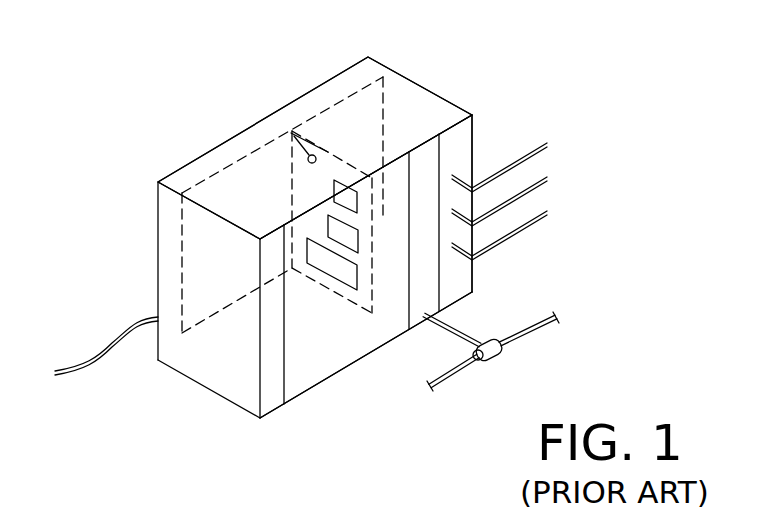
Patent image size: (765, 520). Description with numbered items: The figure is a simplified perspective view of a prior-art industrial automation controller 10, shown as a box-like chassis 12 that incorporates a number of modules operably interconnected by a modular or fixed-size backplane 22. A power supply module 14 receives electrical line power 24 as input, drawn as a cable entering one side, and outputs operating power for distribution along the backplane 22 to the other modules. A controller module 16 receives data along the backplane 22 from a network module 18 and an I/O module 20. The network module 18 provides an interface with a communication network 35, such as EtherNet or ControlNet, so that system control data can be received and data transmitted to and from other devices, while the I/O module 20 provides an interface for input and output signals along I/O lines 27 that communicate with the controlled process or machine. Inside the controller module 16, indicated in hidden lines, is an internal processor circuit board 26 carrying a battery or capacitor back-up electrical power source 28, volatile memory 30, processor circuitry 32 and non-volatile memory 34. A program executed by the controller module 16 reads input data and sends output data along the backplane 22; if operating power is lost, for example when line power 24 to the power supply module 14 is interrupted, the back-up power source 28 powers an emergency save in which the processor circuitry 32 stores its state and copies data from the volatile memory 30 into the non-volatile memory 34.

The industrial automation controller 10 is at (447, 80).
The chassis 12 is at (313, 90).
The power supply module 14 is at (273, 390).
The controller module 16 is at (319, 363).
The network module 18 is at (425, 163).
The I/O module 20 is at (455, 290).
The backplane 22 is at (202, 182).
The electrical line power 24 is at (118, 335).
The internal processor circuit board 26 is at (312, 128).
The I/O lines 27 is at (523, 240).
The back-up electrical power source 28 is at (290, 134).
The volatile memory 30 is at (347, 181).
The processor circuitry 32 is at (322, 273).
The non-volatile memory 34 is at (343, 208).
The communication network 35 is at (524, 338).